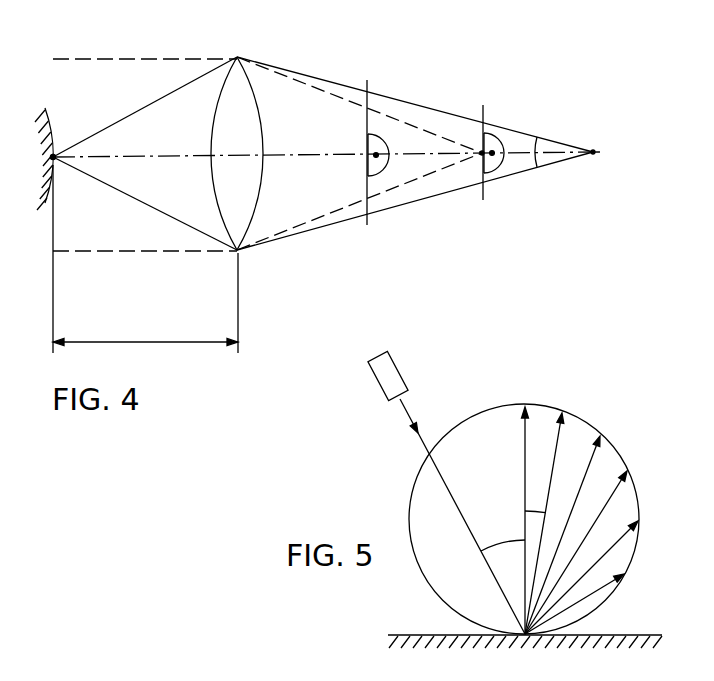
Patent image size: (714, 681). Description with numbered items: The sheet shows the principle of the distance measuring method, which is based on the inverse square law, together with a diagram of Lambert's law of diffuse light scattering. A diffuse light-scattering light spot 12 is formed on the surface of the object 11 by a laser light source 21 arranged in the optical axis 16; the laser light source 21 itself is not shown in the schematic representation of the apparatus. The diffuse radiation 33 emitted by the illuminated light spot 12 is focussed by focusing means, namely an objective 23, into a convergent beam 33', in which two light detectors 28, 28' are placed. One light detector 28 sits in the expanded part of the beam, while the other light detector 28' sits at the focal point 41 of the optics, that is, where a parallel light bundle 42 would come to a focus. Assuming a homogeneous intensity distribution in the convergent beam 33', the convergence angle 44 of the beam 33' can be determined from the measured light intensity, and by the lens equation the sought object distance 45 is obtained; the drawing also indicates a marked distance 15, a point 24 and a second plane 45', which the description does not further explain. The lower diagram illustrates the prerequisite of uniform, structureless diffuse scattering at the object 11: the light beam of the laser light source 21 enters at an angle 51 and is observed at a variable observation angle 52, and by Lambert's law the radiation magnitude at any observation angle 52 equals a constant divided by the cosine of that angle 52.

In FIG. 4, the object 11 is at (40, 107).
In FIG. 4, the light spot 12 is at (57, 152).
In FIG. 4, the focal distance 15 is at (140, 341).
In FIG. 4, the optical axis 16 is at (158, 158).
In FIG. 5, the laser light source 21 is at (398, 377).
In FIG. 4, the objective 23 is at (248, 122).
In FIG. 4, the focal point 24 is at (596, 152).
In FIG. 4, the light detector 28 is at (351, 164).
In FIG. 4, the light detector 28' is at (507, 130).
In FIG. 4, the diffuse radiation 33 is at (145, 153).
In FIG. 4, the convergent beam 33' is at (415, 155).
In FIG. 4, the focal point 41 is at (480, 161).
In FIG. 4, the parallel light bundle 42 is at (84, 57).
In FIG. 4, the convergence angle 44 is at (540, 161).
In FIG. 4, the object distance 45 is at (394, 170).
In FIG. 4, the detector plane 45' is at (512, 166).
In FIG. 5, the angle 51 is at (503, 545).
In FIG. 5, the observation angle 52 is at (527, 510).